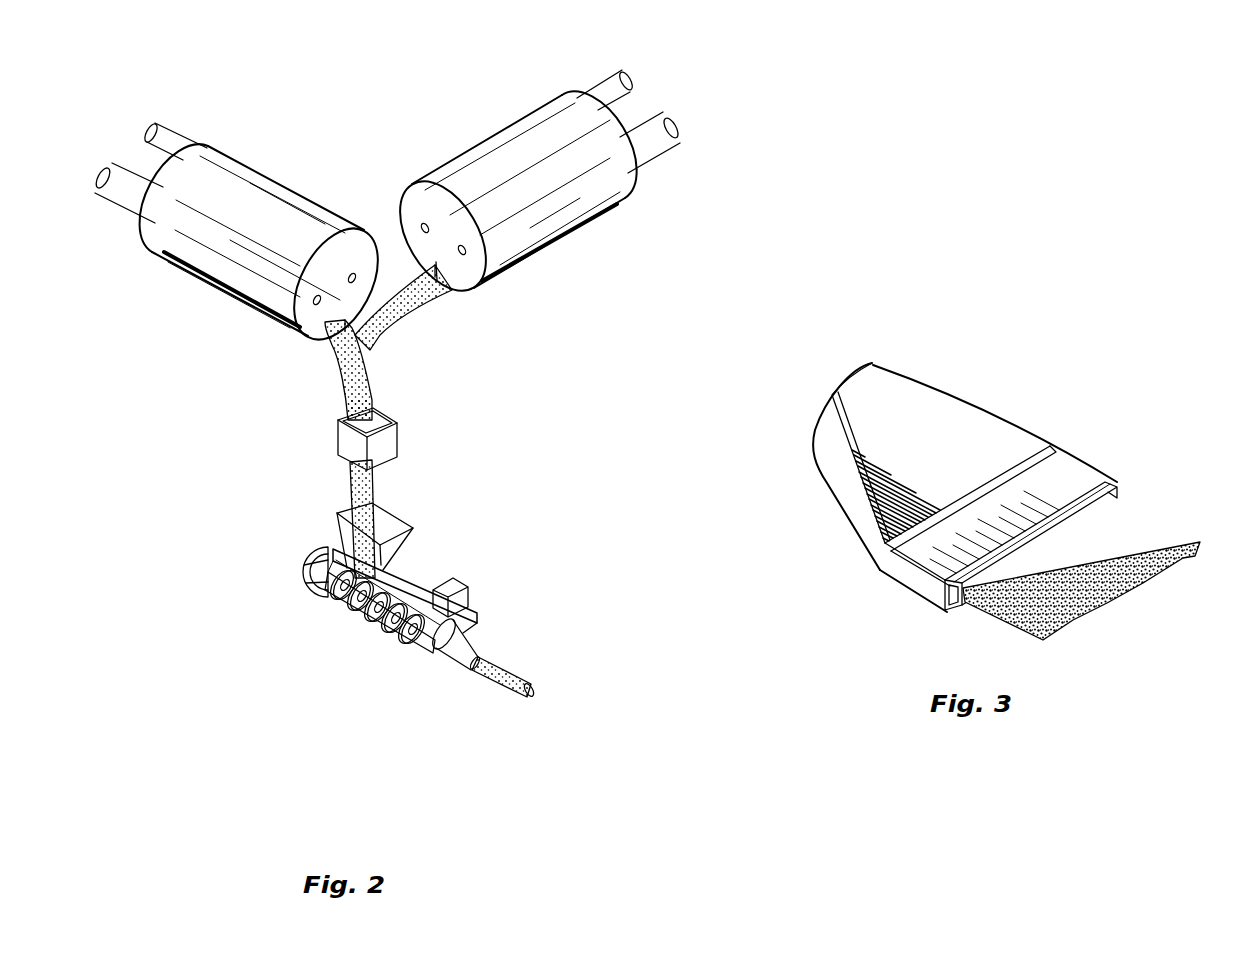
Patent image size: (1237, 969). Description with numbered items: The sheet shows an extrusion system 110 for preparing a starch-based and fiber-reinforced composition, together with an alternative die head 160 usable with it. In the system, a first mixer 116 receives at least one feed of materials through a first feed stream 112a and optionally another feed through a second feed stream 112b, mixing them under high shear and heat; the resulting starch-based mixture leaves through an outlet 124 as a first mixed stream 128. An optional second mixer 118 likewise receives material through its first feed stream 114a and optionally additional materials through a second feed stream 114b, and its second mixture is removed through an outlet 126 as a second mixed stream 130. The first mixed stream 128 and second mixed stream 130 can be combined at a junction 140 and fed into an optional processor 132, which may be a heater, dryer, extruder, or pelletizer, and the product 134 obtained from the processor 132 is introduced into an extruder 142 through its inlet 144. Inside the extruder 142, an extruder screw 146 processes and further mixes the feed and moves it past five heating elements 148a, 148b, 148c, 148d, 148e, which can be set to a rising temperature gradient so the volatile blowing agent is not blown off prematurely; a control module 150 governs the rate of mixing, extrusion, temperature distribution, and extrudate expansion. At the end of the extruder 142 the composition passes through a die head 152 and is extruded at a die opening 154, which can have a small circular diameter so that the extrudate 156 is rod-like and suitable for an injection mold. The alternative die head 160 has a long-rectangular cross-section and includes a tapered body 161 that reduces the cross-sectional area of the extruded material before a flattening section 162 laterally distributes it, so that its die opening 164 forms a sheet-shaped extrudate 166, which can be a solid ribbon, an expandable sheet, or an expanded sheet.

In FIG. 2, the extrusion system 110 is at (366, 88).
In FIG. 2, the first feed stream 112a is at (125, 205).
In FIG. 2, the second feed stream 112b is at (178, 135).
In FIG. 2, the first feed stream 114a is at (606, 86).
In FIG. 2, the second feed stream 114b is at (666, 147).
In FIG. 2, the first mixer 116 is at (152, 243).
In FIG. 2, the second mixer 118 is at (617, 188).
In FIG. 2, the outlet 124 is at (363, 312).
In FIG. 2, the outlet 126 is at (440, 264).
In FIG. 2, the first mixed stream 128 is at (330, 342).
In FIG. 2, the second mixed stream 130 is at (441, 292).
In FIG. 2, the processor 132 is at (392, 440).
In FIG. 2, the product 134 is at (378, 495).
In FIG. 2, the junction of strands 140 is at (368, 398).
In FIG. 2, the extruder 142 is at (415, 562).
In FIG. 2, the inlet 144 is at (394, 532).
In FIG. 2, the extruder screw 146 is at (322, 595).
In FIG. 2, the heating element 148a is at (340, 602).
In FIG. 2, the heating element 148b is at (358, 613).
In FIG. 2, the heating element 148c is at (376, 624).
In FIG. 2, the heating element 148d is at (394, 635).
In FIG. 2, the heating element 148e is at (410, 645).
In FIG. 2, the control module 150 is at (452, 580).
In FIG. 2, the die head 152 is at (470, 645).
In FIG. 2, the die opening 154 is at (522, 668).
In FIG. 2, the extrudate 156 is at (522, 678).
In FIG. 3, the die head 160 is at (1075, 362).
In FIG. 3, the tapered body 161 is at (925, 398).
In FIG. 3, the flattening section 162 is at (1058, 468).
In FIG. 3, the die opening 164 is at (1112, 488).
In FIG. 3, the sheet-shaped extrudate 166 is at (1150, 527).